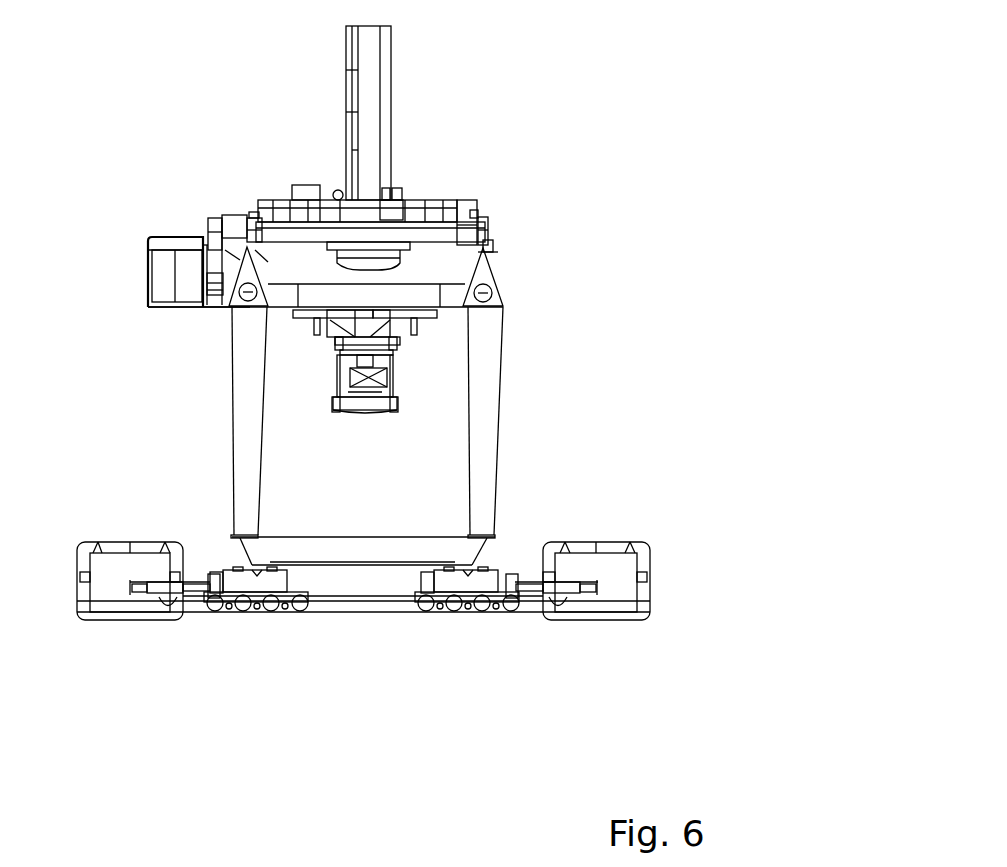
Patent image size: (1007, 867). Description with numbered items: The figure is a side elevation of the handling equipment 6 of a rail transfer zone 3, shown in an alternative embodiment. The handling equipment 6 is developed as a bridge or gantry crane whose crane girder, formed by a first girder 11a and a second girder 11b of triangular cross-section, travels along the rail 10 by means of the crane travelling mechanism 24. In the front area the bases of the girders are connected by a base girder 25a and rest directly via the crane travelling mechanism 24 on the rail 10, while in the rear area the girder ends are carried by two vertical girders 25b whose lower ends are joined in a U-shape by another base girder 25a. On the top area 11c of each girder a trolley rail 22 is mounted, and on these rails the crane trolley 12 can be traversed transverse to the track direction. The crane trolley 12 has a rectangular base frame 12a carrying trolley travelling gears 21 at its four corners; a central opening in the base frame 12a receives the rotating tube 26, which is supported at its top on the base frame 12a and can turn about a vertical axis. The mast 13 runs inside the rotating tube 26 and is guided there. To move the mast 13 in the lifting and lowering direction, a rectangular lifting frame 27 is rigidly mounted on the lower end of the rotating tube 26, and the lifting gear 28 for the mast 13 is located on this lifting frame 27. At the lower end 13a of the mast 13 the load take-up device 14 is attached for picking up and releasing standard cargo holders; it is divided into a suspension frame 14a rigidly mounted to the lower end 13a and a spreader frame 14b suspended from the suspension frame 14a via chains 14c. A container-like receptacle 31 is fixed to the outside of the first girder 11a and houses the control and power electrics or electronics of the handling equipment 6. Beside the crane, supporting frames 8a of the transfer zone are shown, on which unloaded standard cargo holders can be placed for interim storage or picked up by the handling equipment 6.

The rail transfer zone 3 is at (198, 83).
The handling equipment 6 is at (552, 196).
The supporting frame 8a is at (117, 542).
The rail 10 is at (322, 612).
The first girder 11a is at (240, 275).
The second girder 11b is at (483, 276).
The top area 11c is at (489, 249).
The crane trolley 12 is at (423, 238).
The base frame 12a is at (253, 226).
The mast 13 is at (392, 126).
The lower end 13a is at (373, 343).
The load take-up device 14 is at (383, 399).
The suspension frame 14a is at (390, 359).
The spreader frame 14b is at (398, 410).
The chains 14c is at (393, 371).
The trolley travelling gears 21 is at (489, 246).
The trolley rail 22 is at (212, 235).
The crane travelling mechanism 24 is at (468, 612).
The base girder 25a is at (368, 553).
The vertical girders 25b is at (246, 423).
The rotating tube 26 is at (357, 270).
The lifting frame 27 is at (314, 327).
The lifting gear 28 is at (405, 301).
The container-like receptacle 31 is at (150, 262).